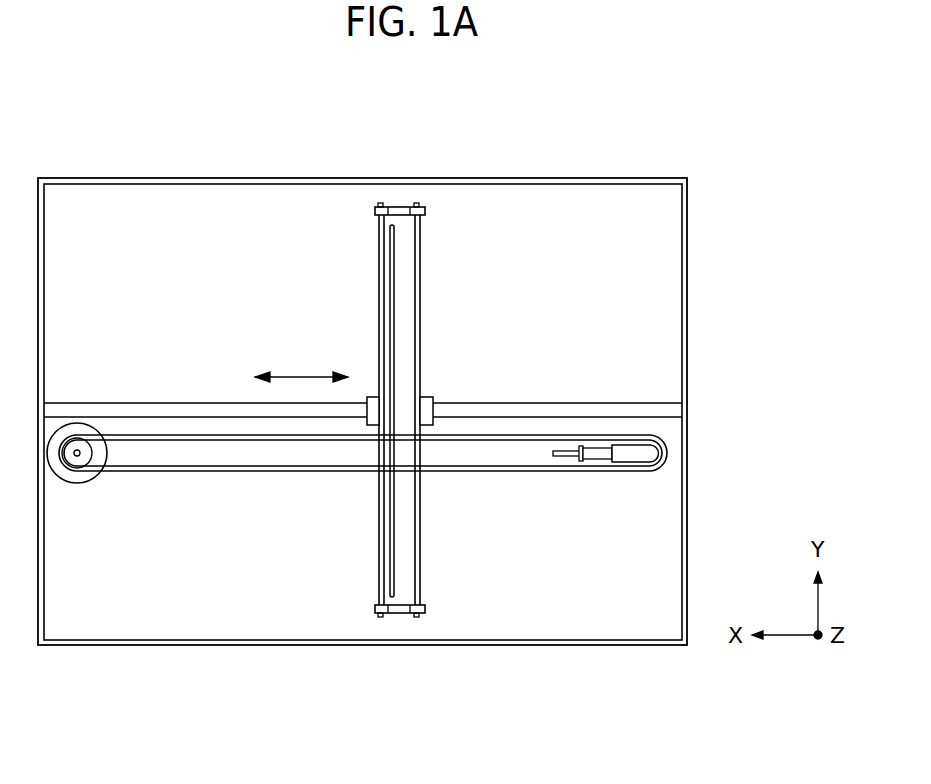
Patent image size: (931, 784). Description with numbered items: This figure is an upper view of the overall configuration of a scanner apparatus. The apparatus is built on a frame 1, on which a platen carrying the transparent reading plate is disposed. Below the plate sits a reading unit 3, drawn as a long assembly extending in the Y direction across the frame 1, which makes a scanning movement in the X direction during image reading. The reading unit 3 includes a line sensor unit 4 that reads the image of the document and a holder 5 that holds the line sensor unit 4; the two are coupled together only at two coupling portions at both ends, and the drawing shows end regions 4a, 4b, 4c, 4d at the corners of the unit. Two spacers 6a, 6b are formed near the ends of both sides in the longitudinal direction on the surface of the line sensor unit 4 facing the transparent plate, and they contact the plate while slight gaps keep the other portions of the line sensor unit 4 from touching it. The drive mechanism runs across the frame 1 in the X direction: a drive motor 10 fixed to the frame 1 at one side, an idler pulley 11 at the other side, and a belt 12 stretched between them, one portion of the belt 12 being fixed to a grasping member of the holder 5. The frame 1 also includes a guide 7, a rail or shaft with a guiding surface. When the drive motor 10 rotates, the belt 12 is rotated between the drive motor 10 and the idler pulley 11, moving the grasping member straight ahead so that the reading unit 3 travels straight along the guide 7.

The frame 1 is at (593, 177).
The reading unit 3 is at (410, 410).
The line sensor unit 4 is at (394, 252).
The holder 5 is at (421, 302).
The rail end portion 4a is at (375, 210).
The rail end portion 4b is at (425, 210).
The rail end portion 4c is at (375, 610).
The rail end portion 4d is at (425, 609).
The spacer 6a is at (398, 207).
The spacer 6b is at (398, 617).
The guide 7 is at (154, 403).
The drive motor 10 is at (80, 483).
The idler pulley 11 is at (660, 452).
The belt 12 is at (510, 472).